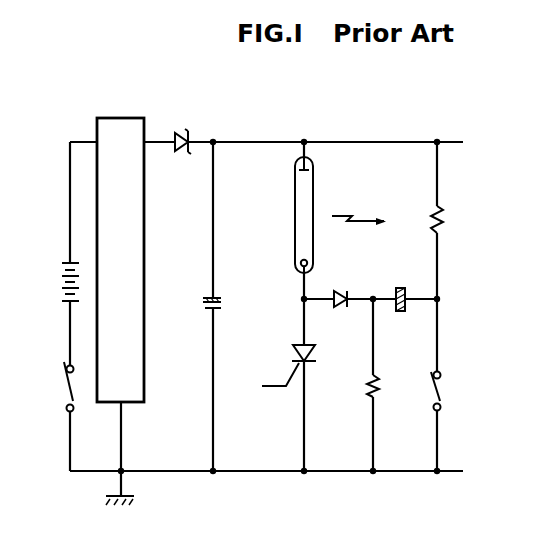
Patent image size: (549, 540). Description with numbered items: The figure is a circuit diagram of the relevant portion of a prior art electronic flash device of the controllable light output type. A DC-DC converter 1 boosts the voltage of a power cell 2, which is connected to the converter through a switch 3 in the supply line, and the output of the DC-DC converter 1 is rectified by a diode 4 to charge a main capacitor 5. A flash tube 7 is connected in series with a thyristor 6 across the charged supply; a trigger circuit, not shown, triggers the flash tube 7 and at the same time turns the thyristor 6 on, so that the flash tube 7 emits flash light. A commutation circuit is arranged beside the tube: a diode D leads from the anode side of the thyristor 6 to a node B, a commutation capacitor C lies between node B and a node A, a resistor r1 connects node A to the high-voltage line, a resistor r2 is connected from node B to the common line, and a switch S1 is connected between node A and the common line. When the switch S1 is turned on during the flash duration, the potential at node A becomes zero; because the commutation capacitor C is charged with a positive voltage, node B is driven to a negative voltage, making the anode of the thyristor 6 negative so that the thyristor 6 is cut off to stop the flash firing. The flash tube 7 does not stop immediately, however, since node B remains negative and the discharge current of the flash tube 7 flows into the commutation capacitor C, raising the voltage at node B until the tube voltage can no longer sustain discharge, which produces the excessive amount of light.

The DC-DC converter 1 is at (144, 328).
The power cell 2 is at (60, 284).
The power switch 3 is at (67, 383).
The diode 4 is at (190, 131).
The main capacitor 5 is at (215, 297).
The thyristor 6 is at (311, 348).
The flash tube 7 is at (330, 172).
The resistor r1 is at (445, 222).
The resistor r2 is at (381, 386).
The switch S1 is at (444, 380).
The node A is at (440, 301).
The node B is at (373, 296).
The commutation capacitor C is at (400, 288).
The diode D is at (337, 292).